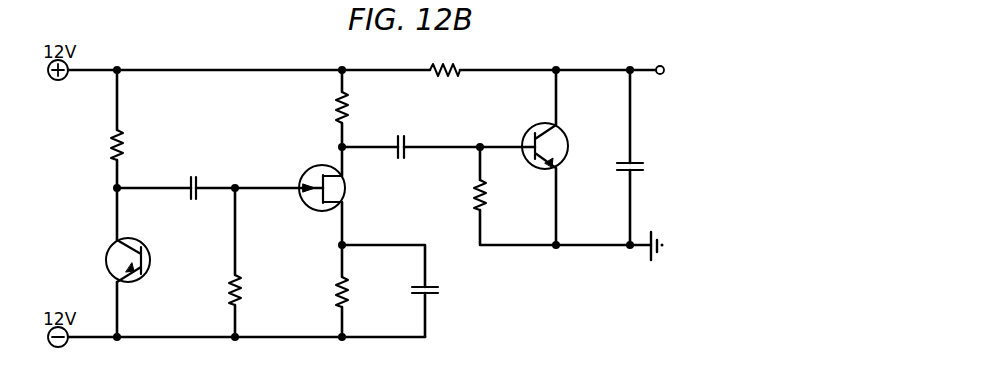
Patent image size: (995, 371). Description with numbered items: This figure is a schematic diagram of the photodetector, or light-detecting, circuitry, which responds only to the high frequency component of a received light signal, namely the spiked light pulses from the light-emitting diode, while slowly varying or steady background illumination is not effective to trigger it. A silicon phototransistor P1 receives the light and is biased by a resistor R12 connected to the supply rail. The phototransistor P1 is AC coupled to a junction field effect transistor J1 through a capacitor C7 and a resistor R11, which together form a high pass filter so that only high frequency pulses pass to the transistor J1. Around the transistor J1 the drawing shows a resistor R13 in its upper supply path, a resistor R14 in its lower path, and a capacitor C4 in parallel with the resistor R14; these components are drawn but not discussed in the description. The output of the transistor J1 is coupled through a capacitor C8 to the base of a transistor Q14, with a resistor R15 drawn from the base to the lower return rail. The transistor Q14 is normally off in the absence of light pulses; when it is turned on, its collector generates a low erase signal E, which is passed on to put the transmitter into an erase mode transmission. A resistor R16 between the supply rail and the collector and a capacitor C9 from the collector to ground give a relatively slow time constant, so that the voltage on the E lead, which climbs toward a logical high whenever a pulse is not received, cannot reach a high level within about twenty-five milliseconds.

The resistor R12 is at (101, 145).
The capacitor C7 is at (194, 177).
The silicon phototransistor P1 is at (112, 261).
The resistor R11 is at (253, 290).
The junction field effect transistor J1 is at (318, 168).
The resistor R13 is at (323, 107).
The resistor R14 is at (361, 292).
The capacitor C4 is at (439, 291).
The capacitor C8 is at (399, 135).
The resistor R15 is at (464, 195).
The resistor R16 is at (444, 58).
The transistor Q14 is at (563, 134).
The capacitor C9 is at (644, 169).
The erase signal E is at (668, 72).